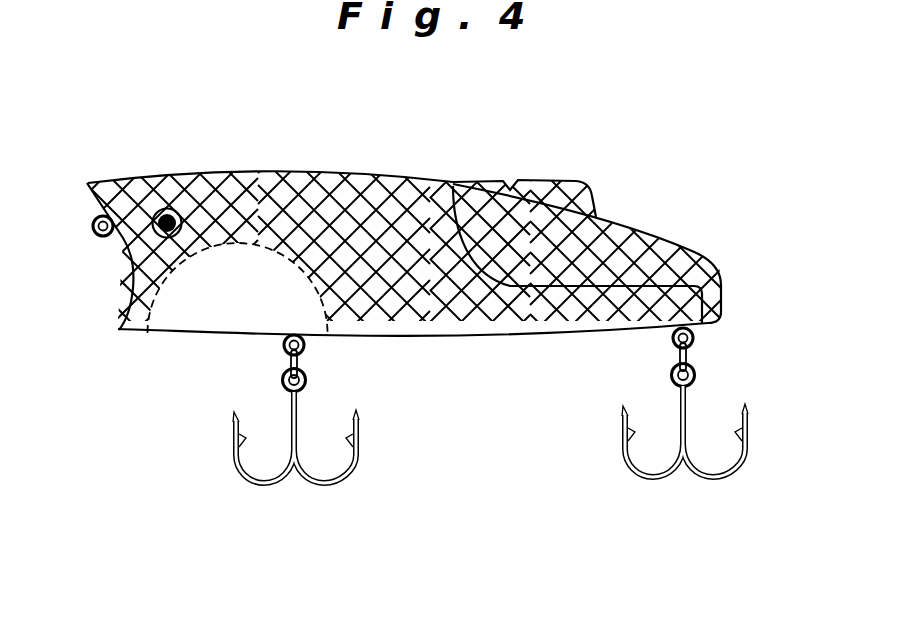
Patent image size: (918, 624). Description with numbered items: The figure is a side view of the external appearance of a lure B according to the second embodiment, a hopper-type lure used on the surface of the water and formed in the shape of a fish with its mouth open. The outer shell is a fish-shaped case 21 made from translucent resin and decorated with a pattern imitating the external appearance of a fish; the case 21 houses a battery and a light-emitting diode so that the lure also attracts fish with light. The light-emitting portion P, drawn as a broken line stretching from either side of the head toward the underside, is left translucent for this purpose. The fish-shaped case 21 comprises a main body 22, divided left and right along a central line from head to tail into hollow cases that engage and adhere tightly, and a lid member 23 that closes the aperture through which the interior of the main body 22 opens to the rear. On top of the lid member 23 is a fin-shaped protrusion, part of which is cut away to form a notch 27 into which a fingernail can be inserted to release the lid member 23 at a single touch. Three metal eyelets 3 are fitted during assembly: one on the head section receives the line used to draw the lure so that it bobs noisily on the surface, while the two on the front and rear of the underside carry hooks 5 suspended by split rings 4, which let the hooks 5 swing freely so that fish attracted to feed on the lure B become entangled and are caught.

The lure B is at (552, 127).
The fish-shaped case 21 is at (363, 175).
The main body 22 is at (222, 176).
The lid member 23 is at (624, 222).
The notch 27 is at (510, 190).
The metal eyelet 3 is at (96, 238).
The split ring 4 is at (290, 363).
The hook 5 is at (292, 427).
The light-emitting portion P is at (183, 323).